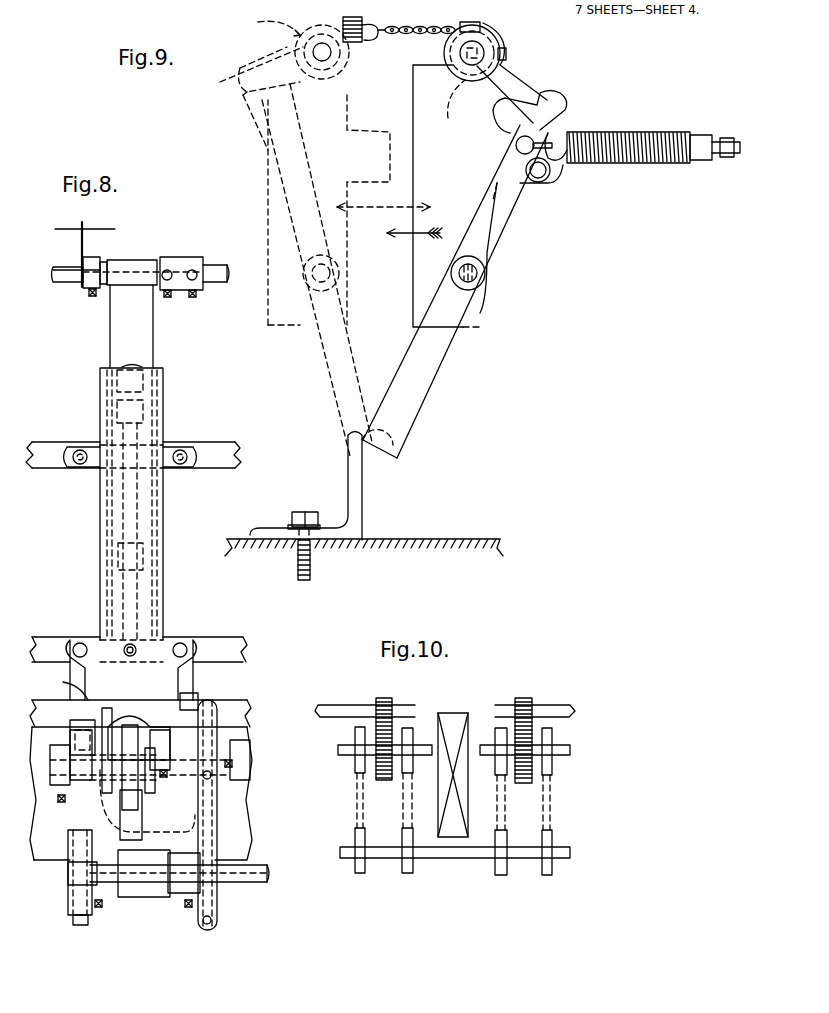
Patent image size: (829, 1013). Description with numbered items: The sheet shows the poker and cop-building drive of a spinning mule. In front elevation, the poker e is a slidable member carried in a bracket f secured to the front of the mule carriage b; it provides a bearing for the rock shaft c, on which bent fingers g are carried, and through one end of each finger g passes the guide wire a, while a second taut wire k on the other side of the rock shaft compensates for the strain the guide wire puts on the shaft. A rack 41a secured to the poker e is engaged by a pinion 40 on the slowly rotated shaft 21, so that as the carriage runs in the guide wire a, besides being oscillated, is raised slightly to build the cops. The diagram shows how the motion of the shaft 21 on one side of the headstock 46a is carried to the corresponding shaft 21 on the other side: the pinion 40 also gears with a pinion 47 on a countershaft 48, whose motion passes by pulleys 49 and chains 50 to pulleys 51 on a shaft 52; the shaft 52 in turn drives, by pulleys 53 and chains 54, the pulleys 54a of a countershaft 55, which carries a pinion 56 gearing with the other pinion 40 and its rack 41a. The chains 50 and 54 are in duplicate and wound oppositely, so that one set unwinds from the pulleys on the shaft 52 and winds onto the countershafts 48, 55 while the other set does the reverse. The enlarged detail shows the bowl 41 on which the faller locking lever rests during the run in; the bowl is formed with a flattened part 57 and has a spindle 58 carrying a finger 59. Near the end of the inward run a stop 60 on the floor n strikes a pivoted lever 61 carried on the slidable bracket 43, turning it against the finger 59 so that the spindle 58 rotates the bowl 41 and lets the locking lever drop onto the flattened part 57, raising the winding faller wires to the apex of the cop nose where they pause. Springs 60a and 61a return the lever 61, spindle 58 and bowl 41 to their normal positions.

In FIG. 8, the shaft 21 is at (232, 708).
In FIG. 10, the shaft 21 is at (348, 690).
In FIG. 8, the pinion 40 is at (121, 670).
In FIG. 10, the pinion 40 is at (384, 700).
In FIG. 9, the bowl 41 is at (501, 37).
In FIG. 8, the rack 41a is at (117, 582).
In FIG. 9, the bracket 43 is at (389, 218).
In FIG. 10, the headstock 46a is at (455, 715).
In FIG. 8, the pinion 47 is at (123, 813).
In FIG. 10, the pinion 47 is at (369, 763).
In FIG. 8, the countershaft 48 is at (237, 717).
In FIG. 10, the countershaft 48 is at (412, 740).
In FIG. 8, the pulley 49 is at (75, 735).
In FIG. 10, the pulley 49 is at (358, 737).
In FIG. 8, the chain 50 is at (77, 827).
In FIG. 10, the chain 50 is at (406, 803).
In FIG. 8, the pulley 51 is at (82, 908).
In FIG. 10, the pulley 51 is at (410, 864).
In FIG. 8, the shaft 52 is at (248, 882).
In FIG. 10, the shaft 52 is at (433, 855).
In FIG. 10, the pulley 53 is at (548, 866).
In FIG. 10, the chain 54 is at (544, 818).
In FIG. 10, the pulley 54a is at (548, 737).
In FIG. 10, the countershaft 55 is at (573, 752).
In FIG. 10, the pinion 56 is at (532, 775).
In FIG. 9, the flattened part 57 is at (347, 78).
In FIG. 9, the spindle 58 is at (332, 55).
In FIG. 9, the finger 59 is at (245, 70).
In FIG. 9, the stop 60 is at (352, 446).
In FIG. 9, the spring 60a is at (343, 24).
In FIG. 9, the pivoted lever 61 is at (340, 335).
In FIG. 9, the spring 61a is at (577, 160).
In FIG. 8, the guide wire a is at (63, 217).
In FIG. 8, the mule carriage b is at (260, 802).
In FIG. 8, the rock shaft c is at (70, 277).
In FIG. 8, the poker e is at (145, 333).
In FIG. 8, the bracket f is at (163, 432).
In FIG. 8, the bent finger g is at (72, 245).
In FIG. 8, the taut wire k is at (52, 275).
In FIG. 9, the floor n is at (452, 528).